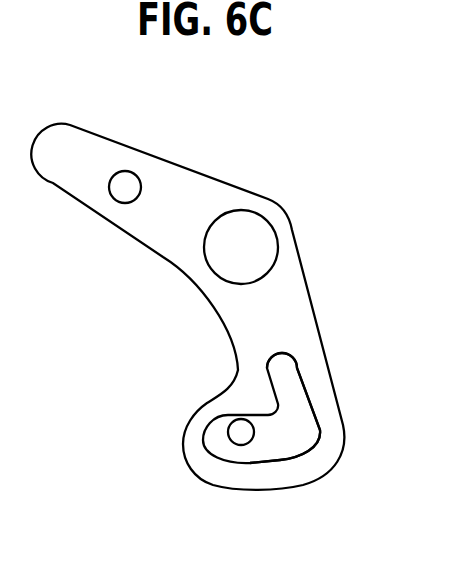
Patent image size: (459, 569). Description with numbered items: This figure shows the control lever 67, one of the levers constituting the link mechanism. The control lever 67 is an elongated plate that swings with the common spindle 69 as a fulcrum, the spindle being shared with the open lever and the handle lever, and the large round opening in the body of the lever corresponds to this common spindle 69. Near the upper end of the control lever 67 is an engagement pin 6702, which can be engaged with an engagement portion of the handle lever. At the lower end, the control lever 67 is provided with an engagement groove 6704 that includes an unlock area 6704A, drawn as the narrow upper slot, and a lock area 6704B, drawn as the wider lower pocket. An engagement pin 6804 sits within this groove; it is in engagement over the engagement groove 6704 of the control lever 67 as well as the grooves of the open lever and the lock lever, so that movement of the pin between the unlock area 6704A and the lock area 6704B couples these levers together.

The control lever 67 is at (198, 172).
The engagement pin 6702 is at (108, 170).
The common spindle 69 is at (277, 230).
The engagement groove 6704 is at (298, 437).
The unlock area 6704A is at (287, 383).
The lock area 6704B is at (263, 445).
The engagement pin 6804 is at (228, 438).